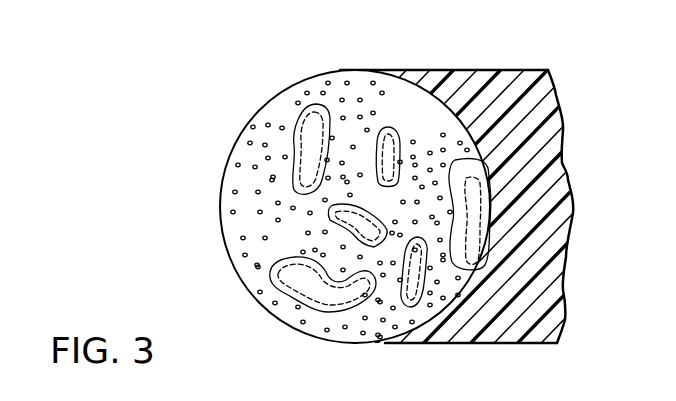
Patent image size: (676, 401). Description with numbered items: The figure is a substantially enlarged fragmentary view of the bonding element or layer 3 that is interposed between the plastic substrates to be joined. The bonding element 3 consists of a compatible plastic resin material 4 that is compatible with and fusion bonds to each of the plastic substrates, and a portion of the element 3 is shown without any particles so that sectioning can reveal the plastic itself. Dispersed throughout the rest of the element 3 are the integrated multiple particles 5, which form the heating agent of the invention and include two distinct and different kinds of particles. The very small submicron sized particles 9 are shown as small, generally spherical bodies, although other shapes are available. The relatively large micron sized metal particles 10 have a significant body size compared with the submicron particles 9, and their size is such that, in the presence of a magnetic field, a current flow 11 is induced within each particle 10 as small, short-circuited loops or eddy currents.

The bonding element 3 is at (479, 65).
The compatible plastic resin material 4 is at (555, 89).
The integrated multiple particles 5 is at (320, 324).
The submicron sized particles 9 is at (348, 82).
The micron sized particles 10 is at (300, 111).
The current flow 11 is at (307, 123).